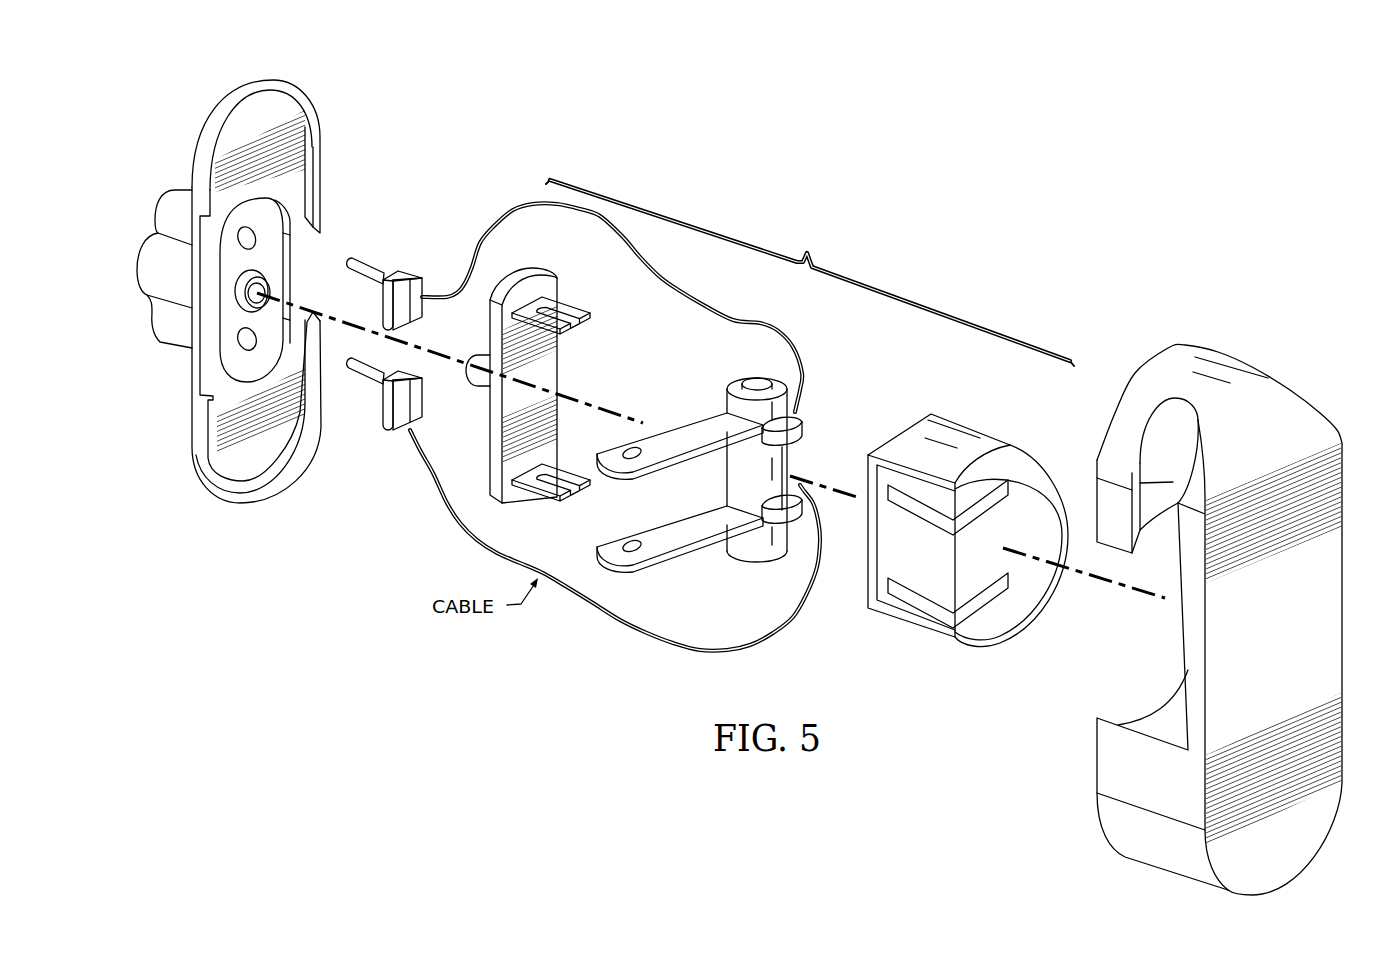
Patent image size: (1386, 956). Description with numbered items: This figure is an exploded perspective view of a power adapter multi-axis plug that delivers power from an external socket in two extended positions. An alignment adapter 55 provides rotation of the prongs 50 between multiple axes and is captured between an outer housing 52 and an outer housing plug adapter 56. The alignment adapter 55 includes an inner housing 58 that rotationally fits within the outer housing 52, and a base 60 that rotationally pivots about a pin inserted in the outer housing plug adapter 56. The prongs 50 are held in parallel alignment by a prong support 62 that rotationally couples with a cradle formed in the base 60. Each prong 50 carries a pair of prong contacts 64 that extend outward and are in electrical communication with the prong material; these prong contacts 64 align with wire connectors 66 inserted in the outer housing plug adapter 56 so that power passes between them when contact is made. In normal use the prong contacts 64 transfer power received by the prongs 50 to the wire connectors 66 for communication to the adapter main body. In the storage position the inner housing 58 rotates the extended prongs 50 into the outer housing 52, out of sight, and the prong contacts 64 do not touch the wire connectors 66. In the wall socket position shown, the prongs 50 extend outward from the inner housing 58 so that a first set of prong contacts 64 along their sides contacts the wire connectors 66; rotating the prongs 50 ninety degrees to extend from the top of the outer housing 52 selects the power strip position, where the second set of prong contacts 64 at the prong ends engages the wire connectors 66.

The prongs 50 is at (677, 435).
The outer housing 52 is at (1250, 366).
The alignment adapter 55 is at (810, 273).
The outer housing plug adapter 56 is at (272, 78).
The inner housing 58 is at (973, 428).
The base 60 is at (530, 270).
The prong support 62 is at (798, 463).
The prong contacts 64 is at (802, 426).
The wire connectors 66 is at (383, 253).